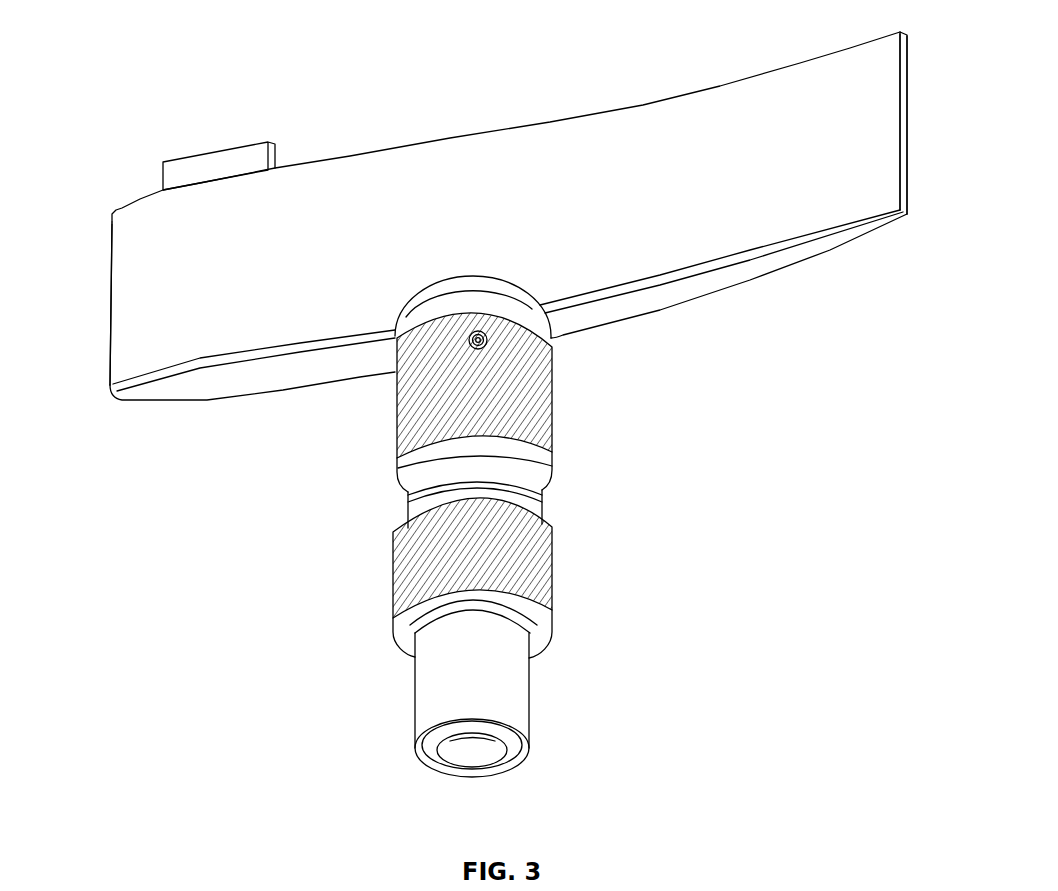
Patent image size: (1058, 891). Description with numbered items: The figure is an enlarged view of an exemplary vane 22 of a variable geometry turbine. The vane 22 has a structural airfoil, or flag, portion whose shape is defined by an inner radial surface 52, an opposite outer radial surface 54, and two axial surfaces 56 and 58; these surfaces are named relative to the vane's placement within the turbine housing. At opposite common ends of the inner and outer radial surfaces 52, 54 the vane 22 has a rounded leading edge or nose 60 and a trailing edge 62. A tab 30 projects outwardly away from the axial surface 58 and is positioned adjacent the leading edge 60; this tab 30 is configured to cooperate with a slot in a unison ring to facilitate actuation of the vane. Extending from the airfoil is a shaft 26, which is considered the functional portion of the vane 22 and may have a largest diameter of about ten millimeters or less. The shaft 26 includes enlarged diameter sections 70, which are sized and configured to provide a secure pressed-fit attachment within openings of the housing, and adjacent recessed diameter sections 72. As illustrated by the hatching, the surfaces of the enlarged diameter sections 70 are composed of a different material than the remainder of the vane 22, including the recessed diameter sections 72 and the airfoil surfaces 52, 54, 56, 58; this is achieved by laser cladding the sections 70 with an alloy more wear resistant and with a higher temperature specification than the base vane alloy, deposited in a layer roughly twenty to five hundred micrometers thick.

The vane 22 is at (323, 69).
The shaft 26 is at (644, 495).
The tab 30 is at (215, 167).
The inner radial surface 52 is at (670, 122).
The outer radial surface 54 is at (281, 396).
The axial surface 56 is at (208, 402).
The axial surface 58 is at (450, 138).
The leading edge 60 is at (108, 303).
The trailing edge 62 is at (907, 130).
The enlarged diameter sections 70 is at (562, 477).
The recessed diameter sections 72 is at (383, 470).